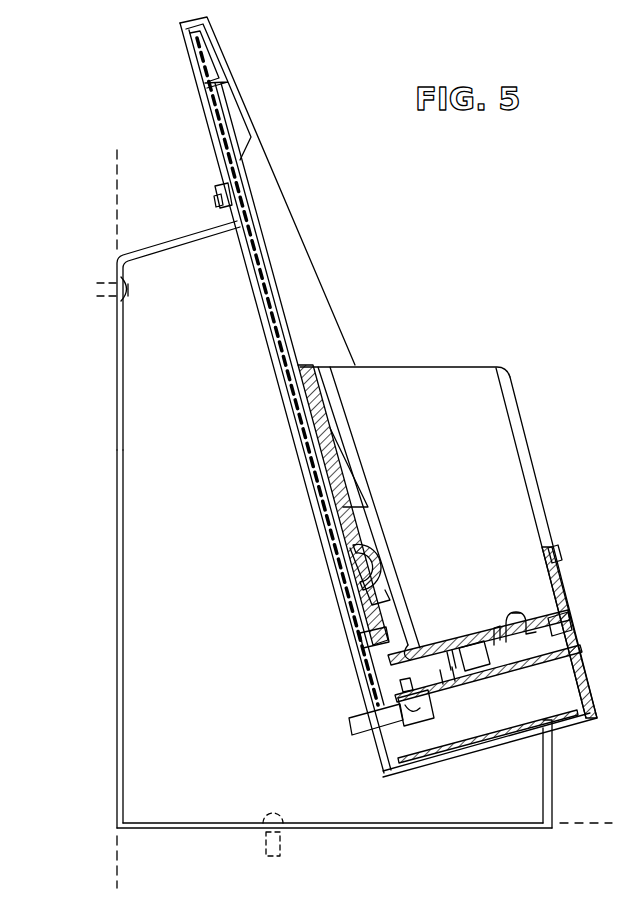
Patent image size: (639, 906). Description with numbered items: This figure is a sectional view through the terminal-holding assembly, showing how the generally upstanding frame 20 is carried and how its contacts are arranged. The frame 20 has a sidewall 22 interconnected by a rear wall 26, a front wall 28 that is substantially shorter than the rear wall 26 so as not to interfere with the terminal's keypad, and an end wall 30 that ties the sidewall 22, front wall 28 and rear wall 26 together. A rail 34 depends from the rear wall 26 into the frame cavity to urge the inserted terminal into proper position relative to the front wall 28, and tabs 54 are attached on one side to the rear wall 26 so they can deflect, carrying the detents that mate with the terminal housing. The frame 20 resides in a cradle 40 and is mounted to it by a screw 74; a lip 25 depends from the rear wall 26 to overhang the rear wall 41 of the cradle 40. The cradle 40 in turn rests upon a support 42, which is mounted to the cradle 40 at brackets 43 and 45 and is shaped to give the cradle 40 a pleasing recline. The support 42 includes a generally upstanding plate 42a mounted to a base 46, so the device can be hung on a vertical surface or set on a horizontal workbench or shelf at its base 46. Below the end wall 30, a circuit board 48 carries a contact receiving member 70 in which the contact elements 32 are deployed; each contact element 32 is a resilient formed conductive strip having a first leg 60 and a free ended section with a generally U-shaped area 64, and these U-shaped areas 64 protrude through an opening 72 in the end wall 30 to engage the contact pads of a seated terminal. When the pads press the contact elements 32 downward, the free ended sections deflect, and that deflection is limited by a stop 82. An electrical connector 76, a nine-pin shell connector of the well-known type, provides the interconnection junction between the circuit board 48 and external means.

The frame 20 is at (521, 421).
The sidewall 22 is at (443, 374).
The lip 25 is at (303, 433).
The rear wall 26 is at (325, 458).
The front wall 28 is at (563, 563).
The end wall 30 is at (567, 588).
The contact element 32 is at (523, 620).
The rail 34 is at (355, 478).
The cradle 40 is at (290, 232).
The rear wall of cradle 41 is at (255, 205).
The support 42 is at (117, 593).
The plate 42a is at (117, 437).
The bracket 43 is at (213, 190).
The bracket 45 is at (553, 724).
The base 46 is at (188, 823).
The circuit board 48 is at (528, 660).
The tab 54 is at (355, 562).
The first leg 60 is at (580, 631).
The U-shaped area 64 is at (510, 625).
The contact receiving member 70 is at (476, 673).
The opening 72 is at (493, 632).
The screw 74 is at (368, 645).
The electrical connector 76 is at (363, 740).
The stop 82 is at (573, 622).